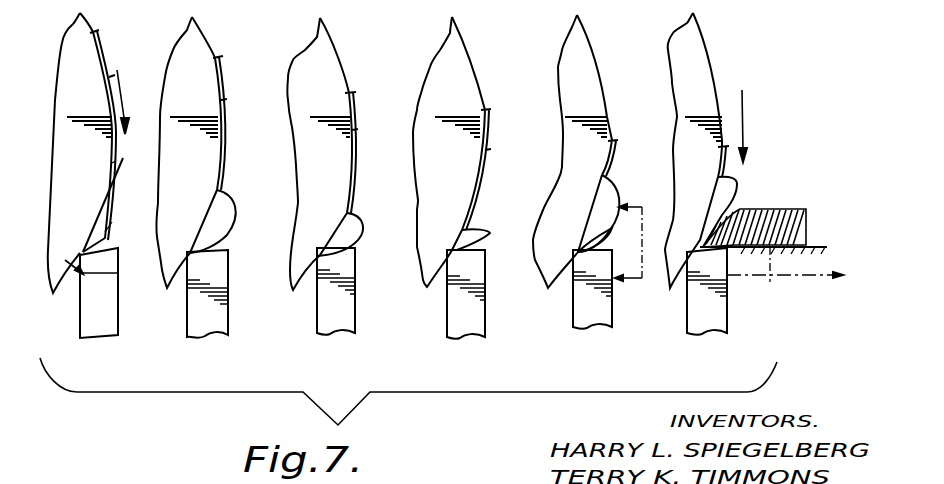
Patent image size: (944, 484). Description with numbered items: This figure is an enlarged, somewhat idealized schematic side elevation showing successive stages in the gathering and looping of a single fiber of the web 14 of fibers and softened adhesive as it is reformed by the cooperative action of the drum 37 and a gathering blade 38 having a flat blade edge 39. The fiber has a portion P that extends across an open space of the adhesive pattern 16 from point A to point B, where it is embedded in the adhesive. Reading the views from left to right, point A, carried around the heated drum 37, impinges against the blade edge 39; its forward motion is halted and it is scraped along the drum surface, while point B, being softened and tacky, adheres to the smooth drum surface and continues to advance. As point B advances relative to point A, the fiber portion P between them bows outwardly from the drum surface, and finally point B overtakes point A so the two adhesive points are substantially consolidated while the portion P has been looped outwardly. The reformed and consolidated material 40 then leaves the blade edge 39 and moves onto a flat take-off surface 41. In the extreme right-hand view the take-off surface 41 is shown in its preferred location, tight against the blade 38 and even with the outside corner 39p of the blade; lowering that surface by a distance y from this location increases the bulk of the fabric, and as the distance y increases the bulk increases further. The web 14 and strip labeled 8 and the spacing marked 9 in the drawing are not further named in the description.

The web 14 is at (105, 43).
The drum 37 is at (82, 93).
The strip edge 8 is at (114, 163).
The blade edge 39 is at (107, 231).
The gathering blade 38 is at (112, 333).
The dimension 9 is at (639, 242).
The reformed and consolidated material 40 is at (783, 207).
The outside corner of the blade 39p is at (732, 208).
The take-off surface 41 is at (813, 240).
The adhesive pattern 16 is at (753, 248).
The distance Y y is at (770, 262).
The point A is at (80, 253).
The point B is at (107, 163).
The fiber portion P is at (232, 218).